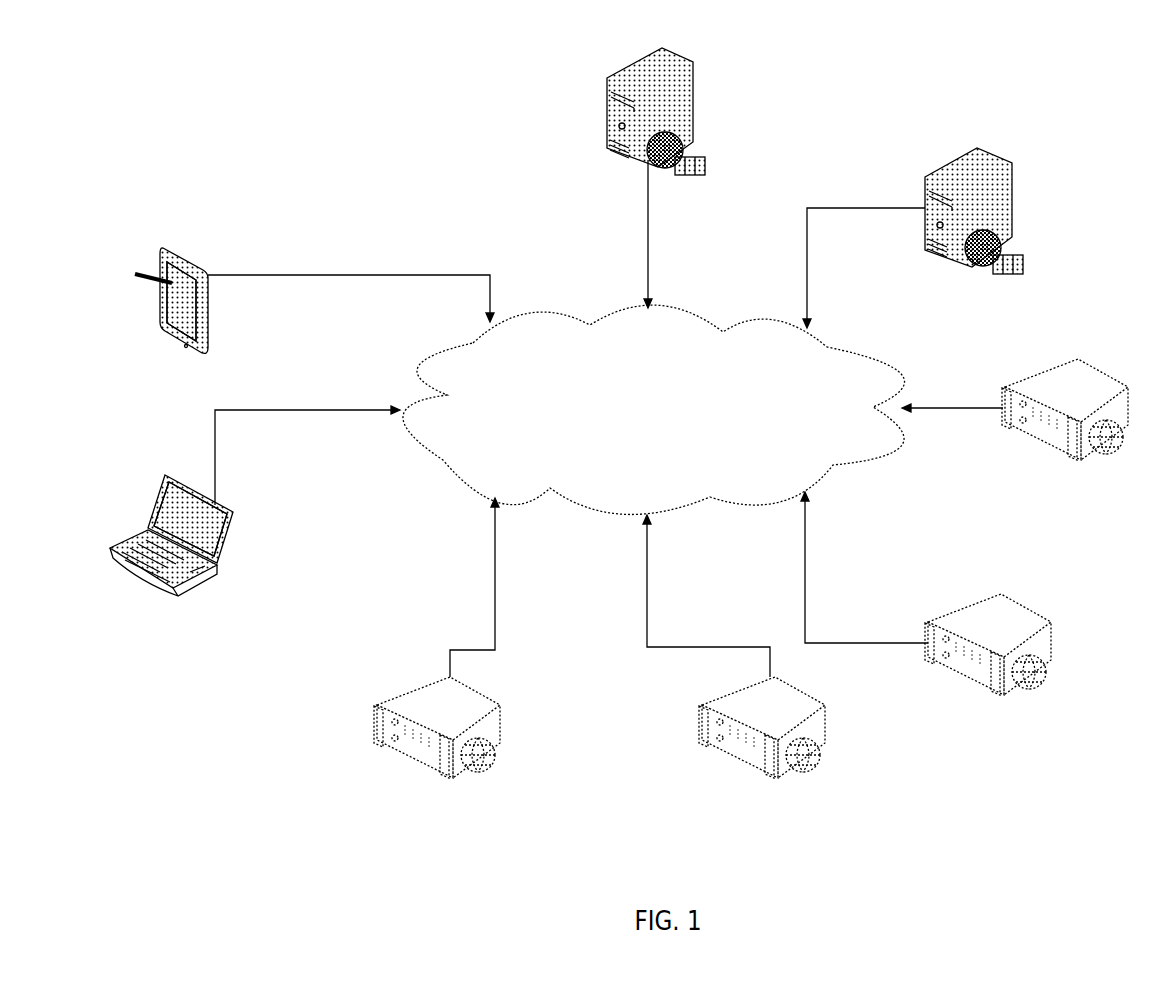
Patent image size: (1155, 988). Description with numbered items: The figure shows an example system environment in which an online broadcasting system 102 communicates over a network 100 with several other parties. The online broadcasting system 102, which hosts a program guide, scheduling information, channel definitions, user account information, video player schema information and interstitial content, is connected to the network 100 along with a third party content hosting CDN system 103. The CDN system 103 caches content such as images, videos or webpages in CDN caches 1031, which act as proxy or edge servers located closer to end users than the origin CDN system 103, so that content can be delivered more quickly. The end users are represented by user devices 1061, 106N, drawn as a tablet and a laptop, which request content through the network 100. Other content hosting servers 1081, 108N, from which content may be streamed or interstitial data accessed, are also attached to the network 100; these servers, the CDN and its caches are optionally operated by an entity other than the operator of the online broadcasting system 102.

The network 100 is at (654, 409).
The online broadcasting system 102 is at (655, 157).
The CDN system 103 is at (913, 217).
The CDN cache 1031 is at (964, 565).
The user device 1061 is at (314, 291).
The user device 106N is at (255, 520).
The server 1081 is at (437, 666).
The server 108N is at (734, 675).